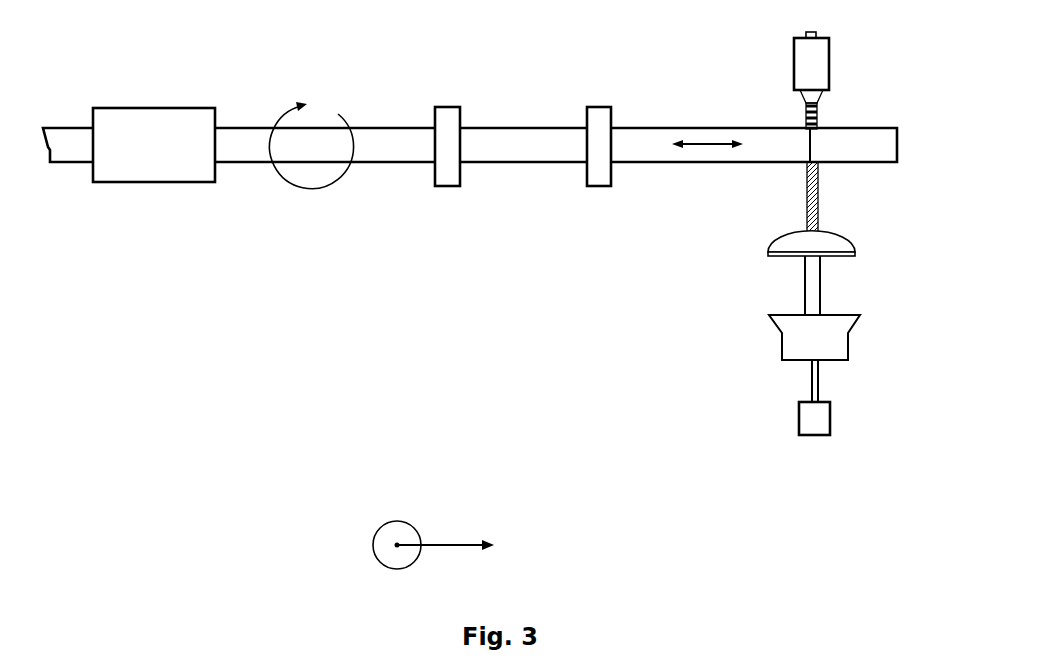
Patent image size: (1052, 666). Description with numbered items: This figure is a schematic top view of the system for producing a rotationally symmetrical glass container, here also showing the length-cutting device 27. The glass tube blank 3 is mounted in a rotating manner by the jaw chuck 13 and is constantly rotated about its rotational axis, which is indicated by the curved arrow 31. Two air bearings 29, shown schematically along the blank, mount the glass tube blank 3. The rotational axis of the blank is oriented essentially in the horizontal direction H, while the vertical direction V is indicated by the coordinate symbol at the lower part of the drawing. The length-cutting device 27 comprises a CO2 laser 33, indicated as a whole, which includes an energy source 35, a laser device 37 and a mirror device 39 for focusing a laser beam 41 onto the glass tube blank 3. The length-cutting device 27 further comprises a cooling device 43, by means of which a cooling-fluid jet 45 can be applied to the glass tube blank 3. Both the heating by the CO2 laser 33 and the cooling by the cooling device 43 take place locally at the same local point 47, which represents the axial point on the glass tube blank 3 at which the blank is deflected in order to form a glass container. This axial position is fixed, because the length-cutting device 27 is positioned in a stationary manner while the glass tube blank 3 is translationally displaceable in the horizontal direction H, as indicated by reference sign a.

The glass tube blank 3 is at (70, 128).
The chuck 13 is at (155, 108).
The air bearings 29 is at (447, 106).
The curved arrow 31 is at (308, 188).
The translational displacement direction a is at (707, 143).
The local point 47 is at (807, 145).
The cooling device 43 is at (829, 63).
The cooling-fluid jet 45 is at (818, 110).
The laser beam 41 is at (818, 197).
The mirror device 39 is at (855, 245).
The laser device 37 is at (850, 345).
The energy source 35 is at (830, 415).
The length-cutting device 27 is at (703, 267).
The CO2 laser 33 is at (747, 370).
The vertical direction V is at (383, 528).
The horizontal direction H is at (448, 543).